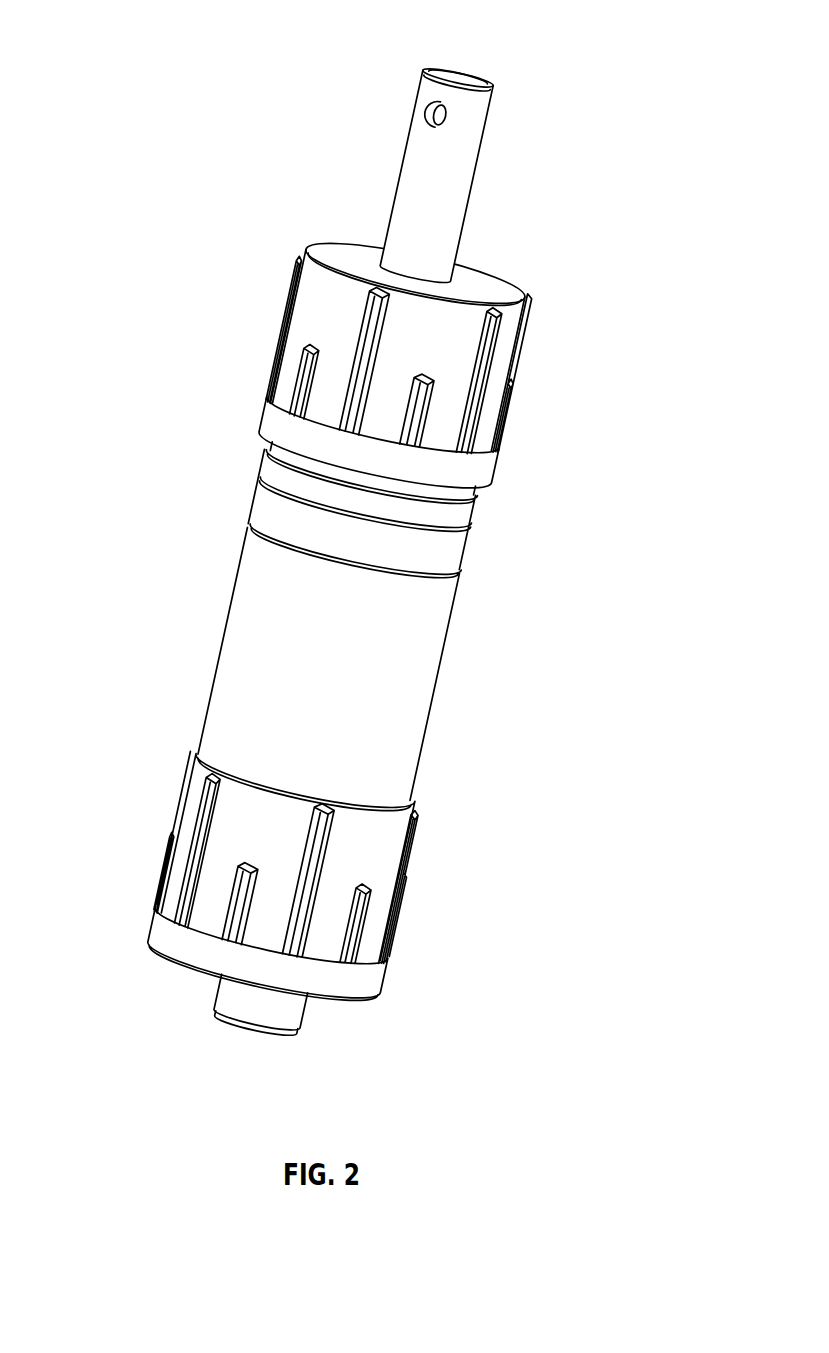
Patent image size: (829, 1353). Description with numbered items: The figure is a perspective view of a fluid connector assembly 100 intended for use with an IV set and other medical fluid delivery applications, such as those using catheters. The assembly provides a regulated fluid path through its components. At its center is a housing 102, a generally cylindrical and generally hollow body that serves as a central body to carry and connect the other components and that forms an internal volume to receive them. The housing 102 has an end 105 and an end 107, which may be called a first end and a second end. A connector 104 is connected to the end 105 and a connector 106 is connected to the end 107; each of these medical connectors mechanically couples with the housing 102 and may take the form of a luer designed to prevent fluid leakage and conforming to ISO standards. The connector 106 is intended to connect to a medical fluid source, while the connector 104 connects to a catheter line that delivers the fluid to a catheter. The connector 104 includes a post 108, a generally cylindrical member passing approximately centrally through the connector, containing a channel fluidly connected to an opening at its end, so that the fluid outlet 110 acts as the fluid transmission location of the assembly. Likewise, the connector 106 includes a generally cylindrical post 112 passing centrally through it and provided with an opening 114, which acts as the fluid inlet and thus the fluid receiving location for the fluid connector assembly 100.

The fluid connector assembly 100 is at (345, 554).
The housing 102 is at (329, 662).
The connector 104 is at (283, 882).
The end 105 is at (328, 663).
The connector 106 is at (395, 365).
The end 107 is at (363, 504).
The post 108 is at (259, 1007).
The fluid outlet 110 is at (255, 1025).
The post 112 is at (436, 175).
The opening 114 is at (435, 114).